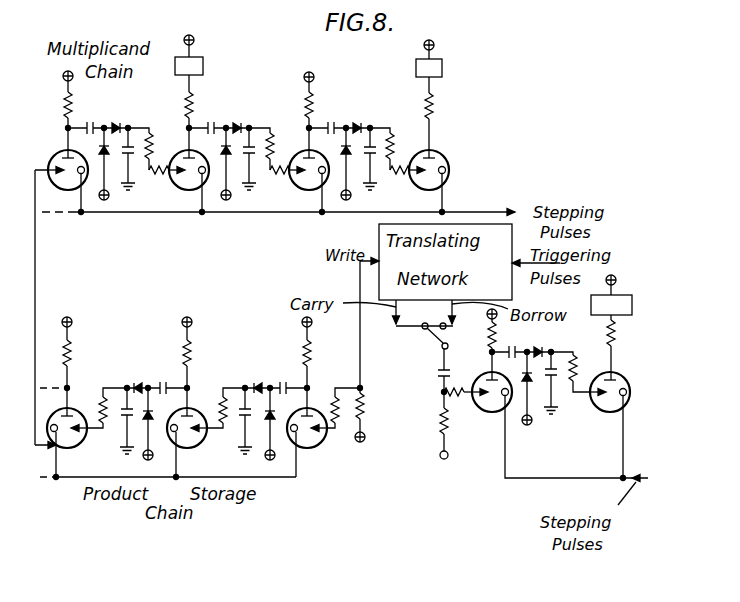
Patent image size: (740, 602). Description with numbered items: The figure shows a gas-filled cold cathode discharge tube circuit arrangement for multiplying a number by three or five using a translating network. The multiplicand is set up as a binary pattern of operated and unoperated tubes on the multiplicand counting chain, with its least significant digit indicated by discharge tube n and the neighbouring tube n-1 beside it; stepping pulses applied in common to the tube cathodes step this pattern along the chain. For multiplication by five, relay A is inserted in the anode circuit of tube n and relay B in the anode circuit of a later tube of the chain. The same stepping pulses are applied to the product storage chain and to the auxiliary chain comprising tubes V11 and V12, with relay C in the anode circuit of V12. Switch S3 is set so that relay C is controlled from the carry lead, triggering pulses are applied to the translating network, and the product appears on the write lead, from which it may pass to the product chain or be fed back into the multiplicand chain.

The discharge tube n-1 is at (108, 154).
The discharge tube n is at (229, 136).
The relay A is at (196, 68).
The relay B is at (438, 69).
The relay C is at (602, 296).
The switch S3 is at (424, 341).
The discharge tube V11 is at (551, 393).
The discharge tube V12 is at (603, 396).